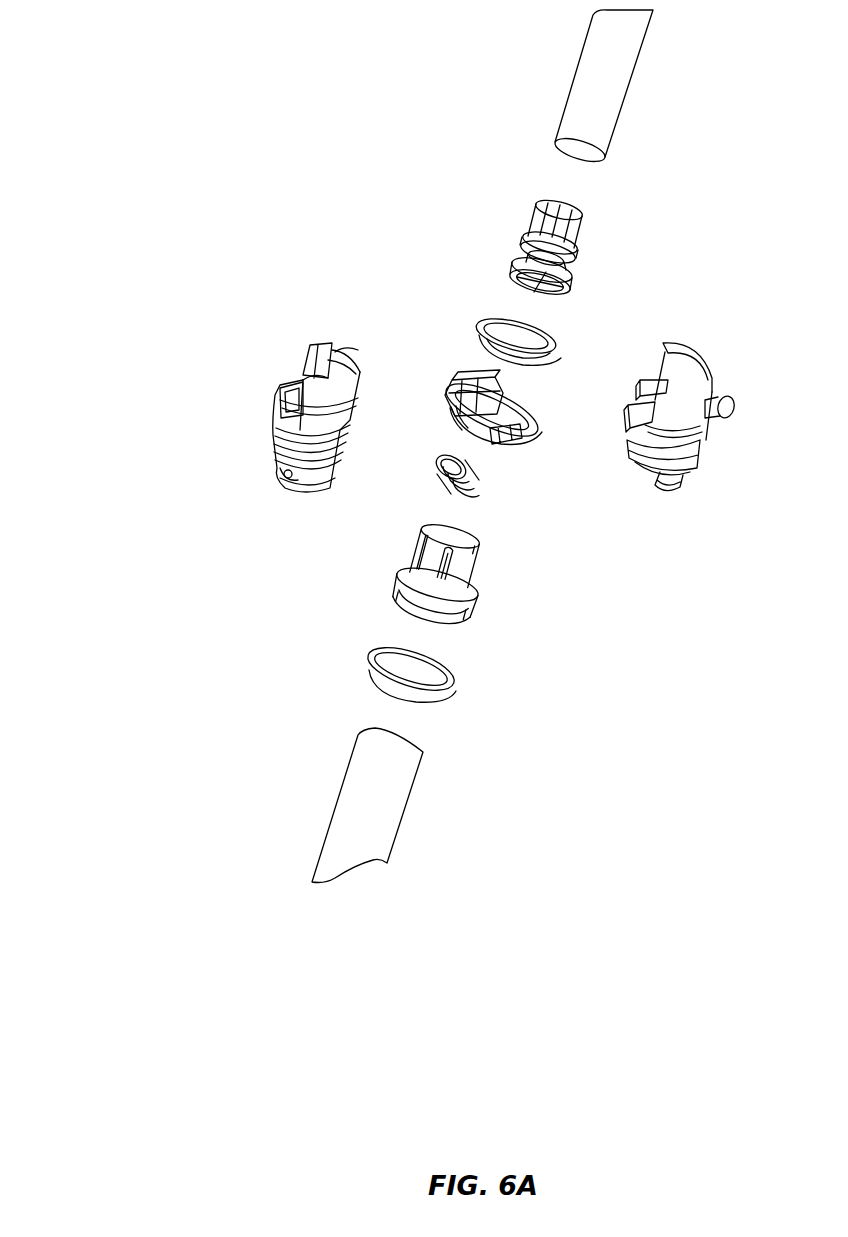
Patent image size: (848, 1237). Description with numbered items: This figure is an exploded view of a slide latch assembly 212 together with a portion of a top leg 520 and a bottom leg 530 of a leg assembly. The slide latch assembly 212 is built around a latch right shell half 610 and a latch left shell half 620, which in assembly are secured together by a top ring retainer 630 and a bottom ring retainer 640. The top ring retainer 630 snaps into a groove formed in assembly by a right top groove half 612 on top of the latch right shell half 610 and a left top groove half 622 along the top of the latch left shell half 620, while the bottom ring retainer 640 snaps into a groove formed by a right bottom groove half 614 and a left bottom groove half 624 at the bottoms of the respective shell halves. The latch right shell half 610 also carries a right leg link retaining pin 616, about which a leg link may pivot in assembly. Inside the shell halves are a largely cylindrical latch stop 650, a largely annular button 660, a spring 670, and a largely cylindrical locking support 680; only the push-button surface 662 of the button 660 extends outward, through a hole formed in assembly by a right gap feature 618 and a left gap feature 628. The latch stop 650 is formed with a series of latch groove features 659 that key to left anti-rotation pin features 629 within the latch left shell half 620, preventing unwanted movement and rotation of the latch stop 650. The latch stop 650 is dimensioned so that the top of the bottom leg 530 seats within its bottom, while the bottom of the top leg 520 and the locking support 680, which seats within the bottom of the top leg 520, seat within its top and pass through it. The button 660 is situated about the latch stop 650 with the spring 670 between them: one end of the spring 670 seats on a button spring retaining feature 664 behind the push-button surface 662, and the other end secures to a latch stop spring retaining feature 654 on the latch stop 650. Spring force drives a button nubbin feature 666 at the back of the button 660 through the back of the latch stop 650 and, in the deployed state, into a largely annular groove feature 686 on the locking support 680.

The slide latch assembly 212 is at (98, 369).
The top leg 520 is at (616, 90).
The bottom leg 530 is at (397, 813).
The latch right shell half 610 is at (728, 409).
The right top groove half 612 is at (698, 363).
The right bottom groove half 614 is at (685, 470).
The right leg link retaining pin 616 is at (740, 400).
The right gap feature 618 is at (645, 380).
The latch left shell half 620 is at (296, 412).
The left top groove half 622 is at (320, 350).
The left bottom groove half 624 is at (277, 438).
The left gap feature 628 is at (277, 395).
The left anti-rotation pin features 629 is at (340, 345).
The top ring retainer 630 is at (540, 333).
The bottom ring retainer 640 is at (467, 680).
The latch stop 650 is at (445, 577).
The latch stop spring retaining feature 654 is at (420, 563).
The latch groove features 659 is at (480, 537).
The button 660 is at (489, 420).
The push-button surface 662 is at (462, 385).
The button spring retaining feature 664 is at (456, 420).
The button nubbin feature 666 is at (510, 432).
The spring 670 is at (440, 478).
The locking support 680 is at (555, 247).
The groove feature 686 is at (520, 255).